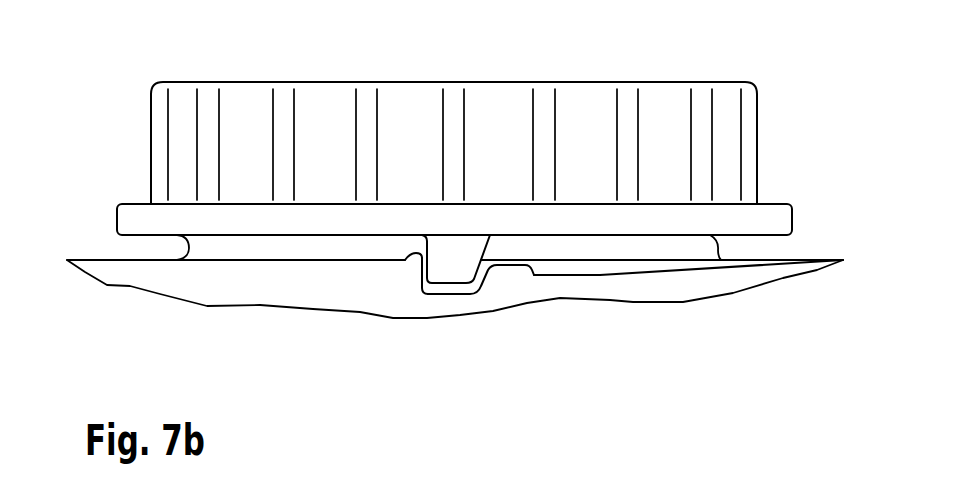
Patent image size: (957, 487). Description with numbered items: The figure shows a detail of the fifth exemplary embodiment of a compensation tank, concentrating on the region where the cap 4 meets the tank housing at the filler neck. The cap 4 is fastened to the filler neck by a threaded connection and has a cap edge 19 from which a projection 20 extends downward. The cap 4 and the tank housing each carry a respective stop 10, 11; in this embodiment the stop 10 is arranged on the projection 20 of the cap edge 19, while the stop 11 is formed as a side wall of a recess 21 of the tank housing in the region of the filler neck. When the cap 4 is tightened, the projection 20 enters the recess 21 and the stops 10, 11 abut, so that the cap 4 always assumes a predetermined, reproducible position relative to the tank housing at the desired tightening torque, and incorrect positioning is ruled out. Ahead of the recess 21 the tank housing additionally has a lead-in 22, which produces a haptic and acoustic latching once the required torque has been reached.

The cap 4 is at (492, 98).
The cap edge 19 is at (772, 223).
The stop 10 is at (422, 275).
The stop 11 is at (406, 261).
The projection 20 is at (458, 266).
The recess 21 is at (445, 294).
The lead-in 22 is at (567, 276).